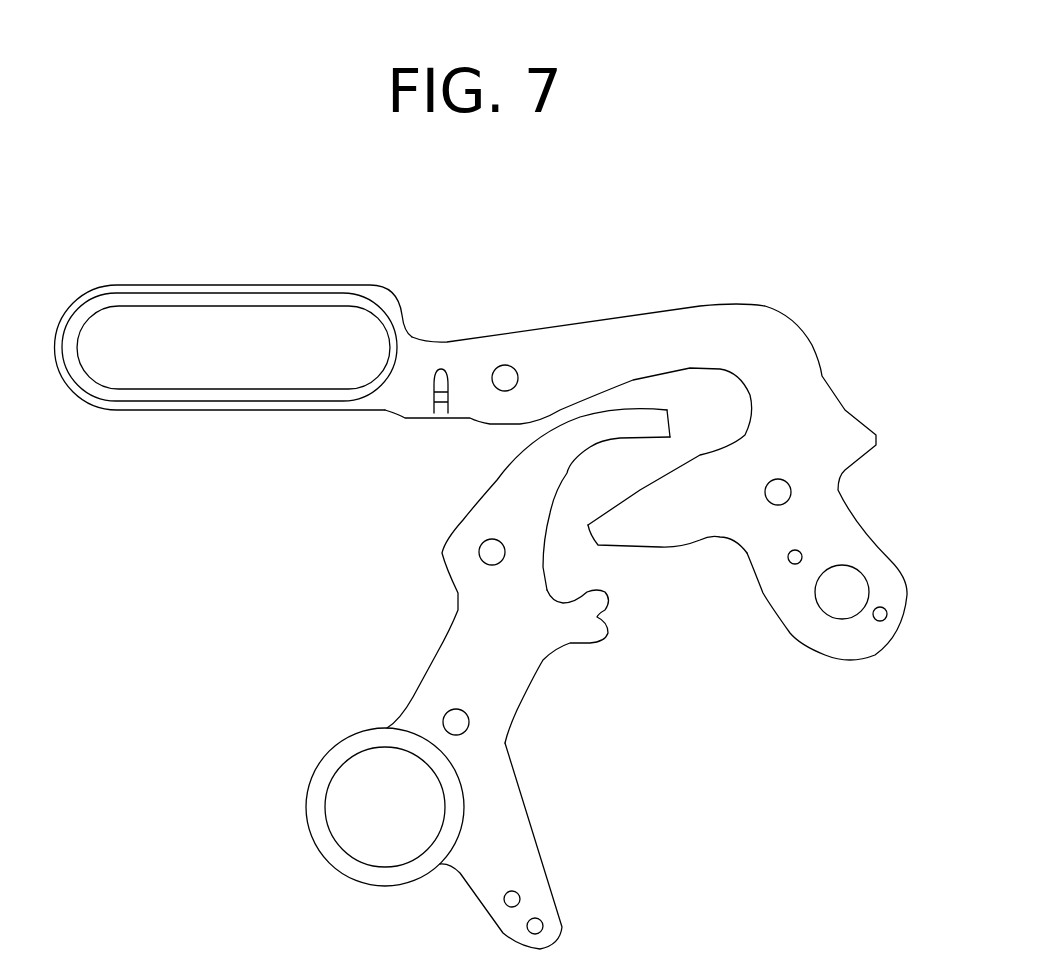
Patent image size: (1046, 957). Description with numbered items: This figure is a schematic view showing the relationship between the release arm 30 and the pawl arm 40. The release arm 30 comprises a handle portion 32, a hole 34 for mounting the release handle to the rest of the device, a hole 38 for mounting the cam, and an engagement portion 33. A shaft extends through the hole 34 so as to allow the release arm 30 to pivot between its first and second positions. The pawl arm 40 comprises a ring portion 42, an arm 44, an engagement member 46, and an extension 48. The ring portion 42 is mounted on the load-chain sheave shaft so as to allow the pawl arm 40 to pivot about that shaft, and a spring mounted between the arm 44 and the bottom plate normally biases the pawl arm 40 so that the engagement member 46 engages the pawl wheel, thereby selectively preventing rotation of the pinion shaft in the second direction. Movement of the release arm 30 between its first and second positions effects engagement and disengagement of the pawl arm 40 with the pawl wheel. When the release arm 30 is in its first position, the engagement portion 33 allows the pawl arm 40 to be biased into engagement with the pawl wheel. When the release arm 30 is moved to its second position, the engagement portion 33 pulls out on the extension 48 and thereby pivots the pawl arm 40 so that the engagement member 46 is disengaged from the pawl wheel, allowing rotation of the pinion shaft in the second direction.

The release arm 30 is at (686, 298).
The handle portion 32 is at (176, 300).
The engagement portion 33 is at (683, 530).
The hole 34 is at (846, 590).
The hole 38 is at (878, 620).
The pawl arm 40 is at (478, 477).
The ring portion 42 is at (313, 818).
The arm 44 is at (536, 893).
The engagement member 46 is at (578, 632).
The extension 48 is at (655, 425).